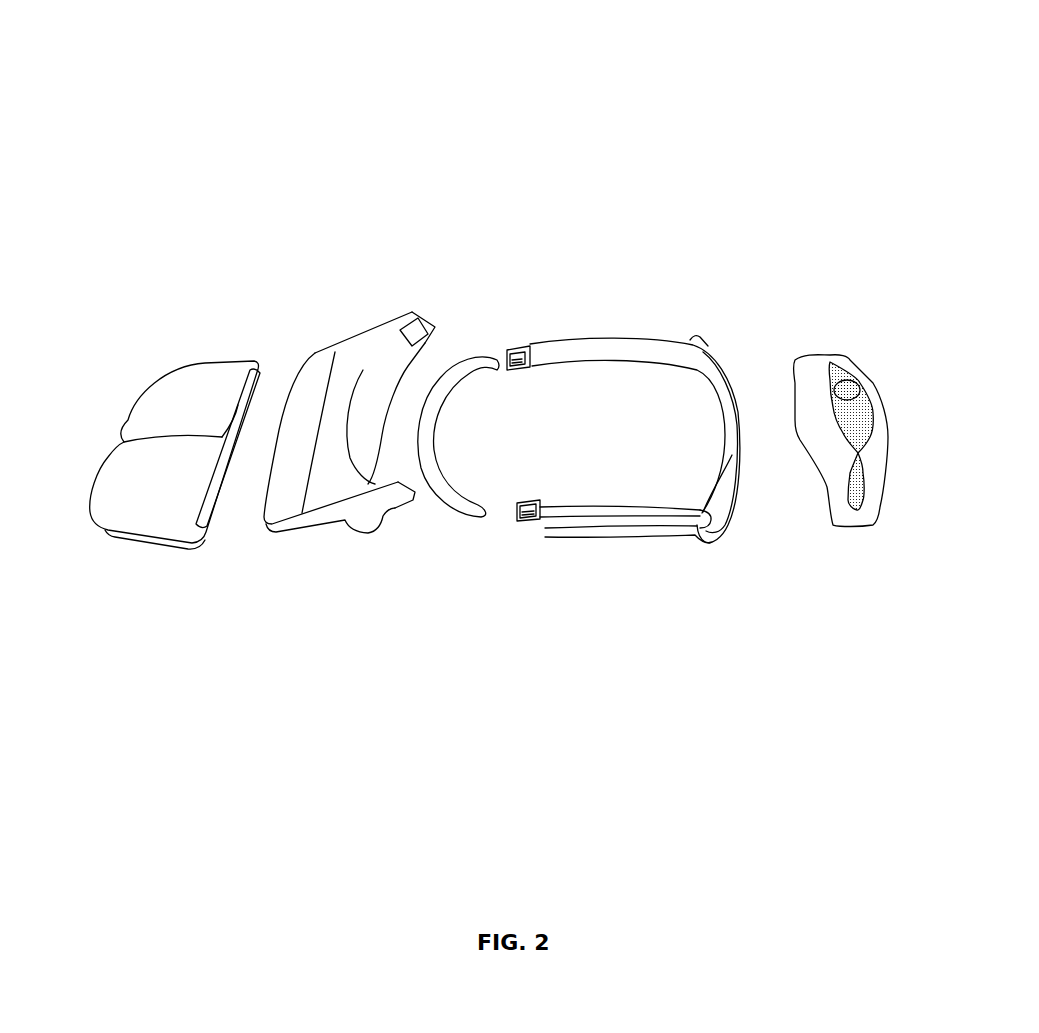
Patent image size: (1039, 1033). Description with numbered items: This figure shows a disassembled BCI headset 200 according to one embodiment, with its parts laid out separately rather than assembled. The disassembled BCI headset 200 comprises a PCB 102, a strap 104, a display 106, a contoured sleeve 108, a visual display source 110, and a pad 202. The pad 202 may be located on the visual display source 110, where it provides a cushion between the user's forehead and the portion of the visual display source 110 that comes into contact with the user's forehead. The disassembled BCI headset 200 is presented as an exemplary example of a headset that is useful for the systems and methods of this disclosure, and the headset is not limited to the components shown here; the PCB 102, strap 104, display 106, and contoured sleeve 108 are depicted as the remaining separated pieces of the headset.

The disassembled BCI headset 200 is at (700, 84).
The PCB 102 is at (817, 373).
The strap 104 is at (630, 537).
The display 106 is at (135, 540).
The contoured sleeve 108 is at (893, 446).
The visual display source 110 is at (338, 517).
The pad 202 is at (463, 377).